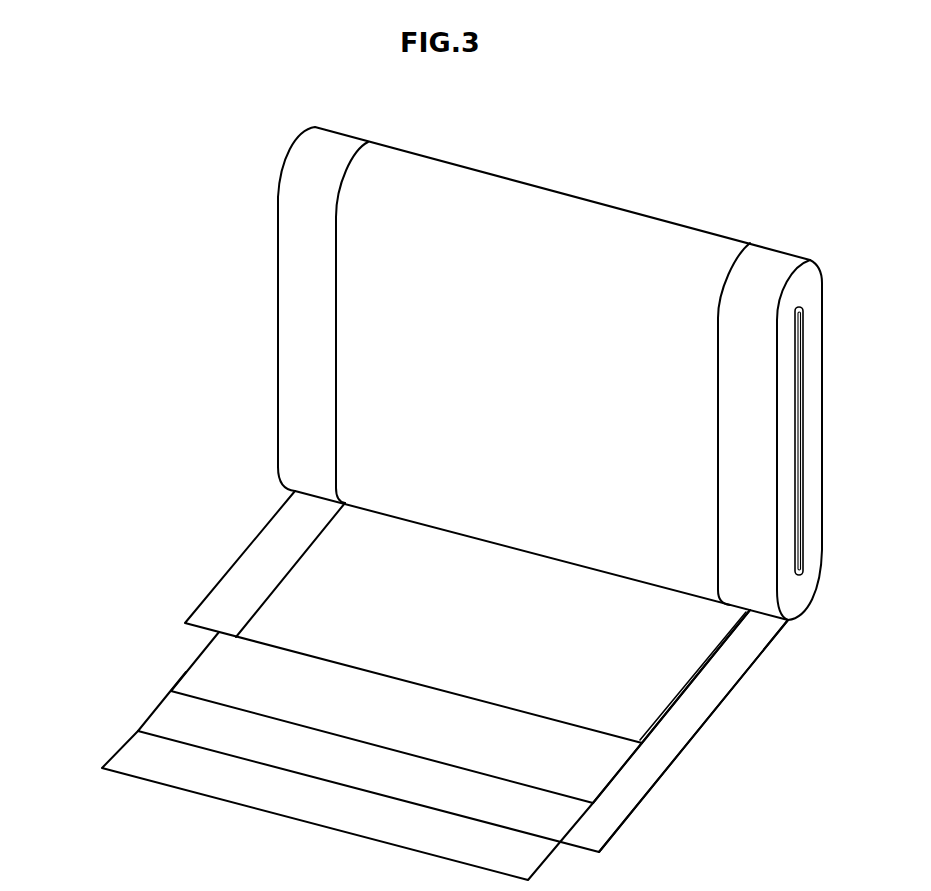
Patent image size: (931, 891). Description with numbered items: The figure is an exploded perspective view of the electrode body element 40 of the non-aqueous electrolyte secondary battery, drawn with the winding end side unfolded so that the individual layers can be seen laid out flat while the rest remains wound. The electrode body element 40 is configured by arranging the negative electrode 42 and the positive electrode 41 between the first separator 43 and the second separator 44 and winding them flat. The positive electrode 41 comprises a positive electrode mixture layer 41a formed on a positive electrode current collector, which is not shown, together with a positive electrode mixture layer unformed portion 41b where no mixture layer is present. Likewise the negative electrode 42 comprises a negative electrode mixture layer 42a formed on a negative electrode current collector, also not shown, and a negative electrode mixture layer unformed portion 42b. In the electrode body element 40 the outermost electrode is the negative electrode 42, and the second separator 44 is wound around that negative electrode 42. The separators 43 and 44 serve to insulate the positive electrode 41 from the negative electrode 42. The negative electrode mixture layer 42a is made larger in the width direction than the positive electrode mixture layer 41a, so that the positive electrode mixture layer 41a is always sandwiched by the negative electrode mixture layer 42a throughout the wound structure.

The electrode body element 40 is at (576, 149).
The positive electrode 41 is at (441, 616).
The positive electrode mixture layer 41a is at (313, 573).
The positive electrode mixture layer unformed portion 41b is at (287, 528).
The negative electrode 42 is at (445, 745).
The negative electrode mixture layer 42a is at (547, 808).
The negative electrode mixture layer unformed portion 42b is at (634, 788).
The first separator 43 is at (211, 667).
The second separator 44 is at (141, 753).